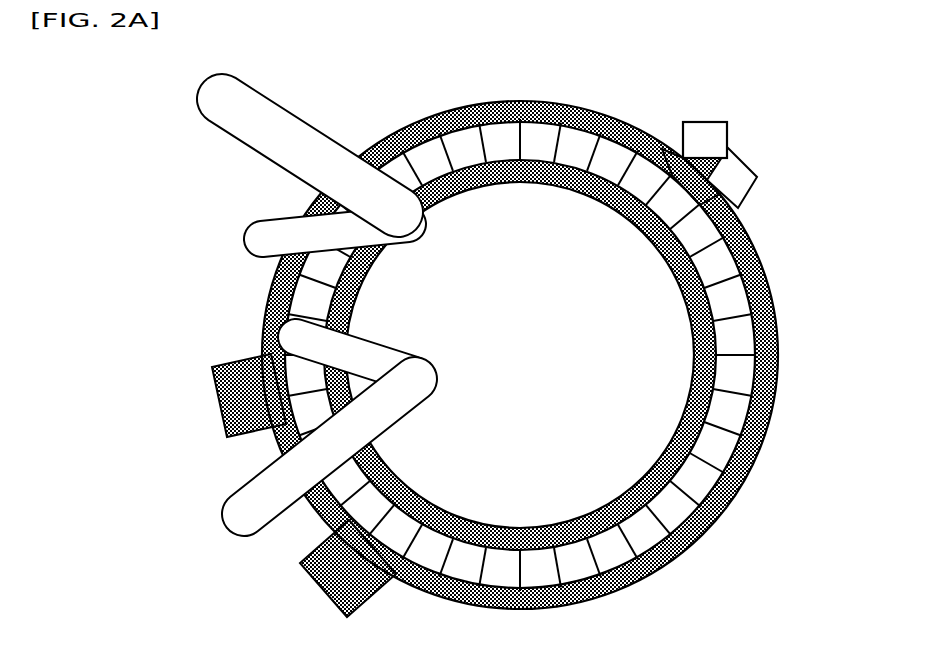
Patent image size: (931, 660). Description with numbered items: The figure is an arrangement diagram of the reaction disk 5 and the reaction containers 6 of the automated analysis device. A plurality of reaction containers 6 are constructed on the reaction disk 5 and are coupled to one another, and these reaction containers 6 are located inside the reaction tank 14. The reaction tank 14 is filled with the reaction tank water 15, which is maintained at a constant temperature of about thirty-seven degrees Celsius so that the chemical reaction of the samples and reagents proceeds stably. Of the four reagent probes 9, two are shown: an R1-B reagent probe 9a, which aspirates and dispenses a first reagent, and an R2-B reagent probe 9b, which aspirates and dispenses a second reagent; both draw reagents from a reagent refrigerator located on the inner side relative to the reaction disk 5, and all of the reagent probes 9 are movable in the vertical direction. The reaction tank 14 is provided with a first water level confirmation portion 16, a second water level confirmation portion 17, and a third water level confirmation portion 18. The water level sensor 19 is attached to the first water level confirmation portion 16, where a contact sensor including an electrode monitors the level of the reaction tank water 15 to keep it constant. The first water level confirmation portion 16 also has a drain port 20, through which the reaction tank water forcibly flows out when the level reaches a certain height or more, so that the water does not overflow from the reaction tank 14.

The reaction tank 14 is at (498, 348).
The reaction disk 5 is at (550, 355).
The reaction tank water 15 is at (770, 413).
The reaction containers 6 is at (717, 267).
The first water level confirmation portion 16 is at (692, 167).
The water level sensor 19 is at (705, 130).
The drain port 20 is at (737, 176).
The second water level confirmation portion 17 is at (240, 401).
The third water level confirmation portion 18 is at (335, 580).
The reagent probe 9 is at (289, 350).
The R1-B reagent probe 9a is at (245, 515).
The R2-B reagent probe 9b is at (239, 112).